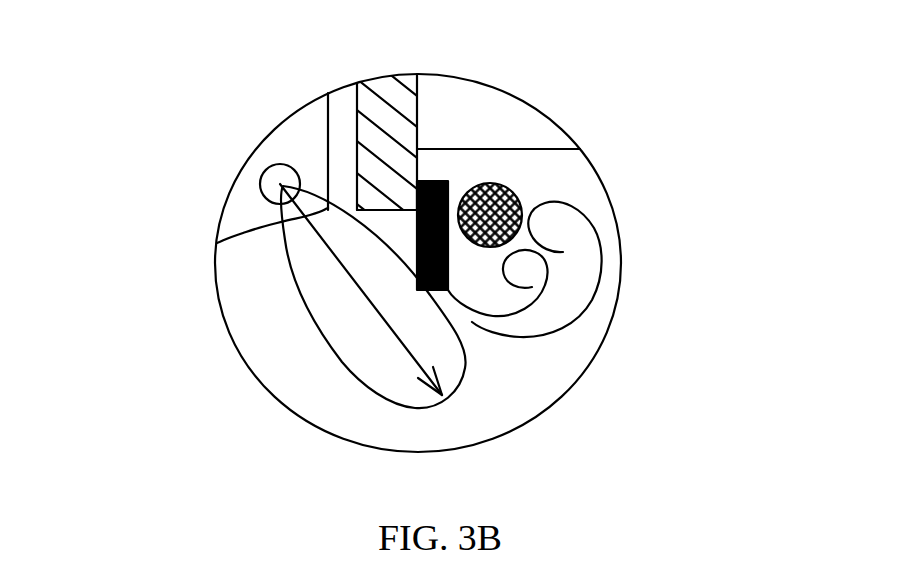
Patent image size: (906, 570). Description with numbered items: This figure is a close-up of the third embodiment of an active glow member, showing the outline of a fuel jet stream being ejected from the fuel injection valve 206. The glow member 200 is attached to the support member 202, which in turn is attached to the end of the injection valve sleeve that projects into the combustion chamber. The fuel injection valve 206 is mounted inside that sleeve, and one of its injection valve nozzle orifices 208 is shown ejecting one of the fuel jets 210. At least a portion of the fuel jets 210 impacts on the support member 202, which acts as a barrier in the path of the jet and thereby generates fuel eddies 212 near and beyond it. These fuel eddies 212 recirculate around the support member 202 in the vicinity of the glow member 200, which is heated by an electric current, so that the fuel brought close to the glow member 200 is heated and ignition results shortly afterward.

The glow member 200 is at (517, 199).
The support member 202 is at (433, 180).
The fuel injection valve 206 is at (313, 113).
The injection valve nozzle orifices 208 is at (282, 177).
The fuel jets 210 is at (368, 357).
The fuel eddies 212 is at (590, 305).